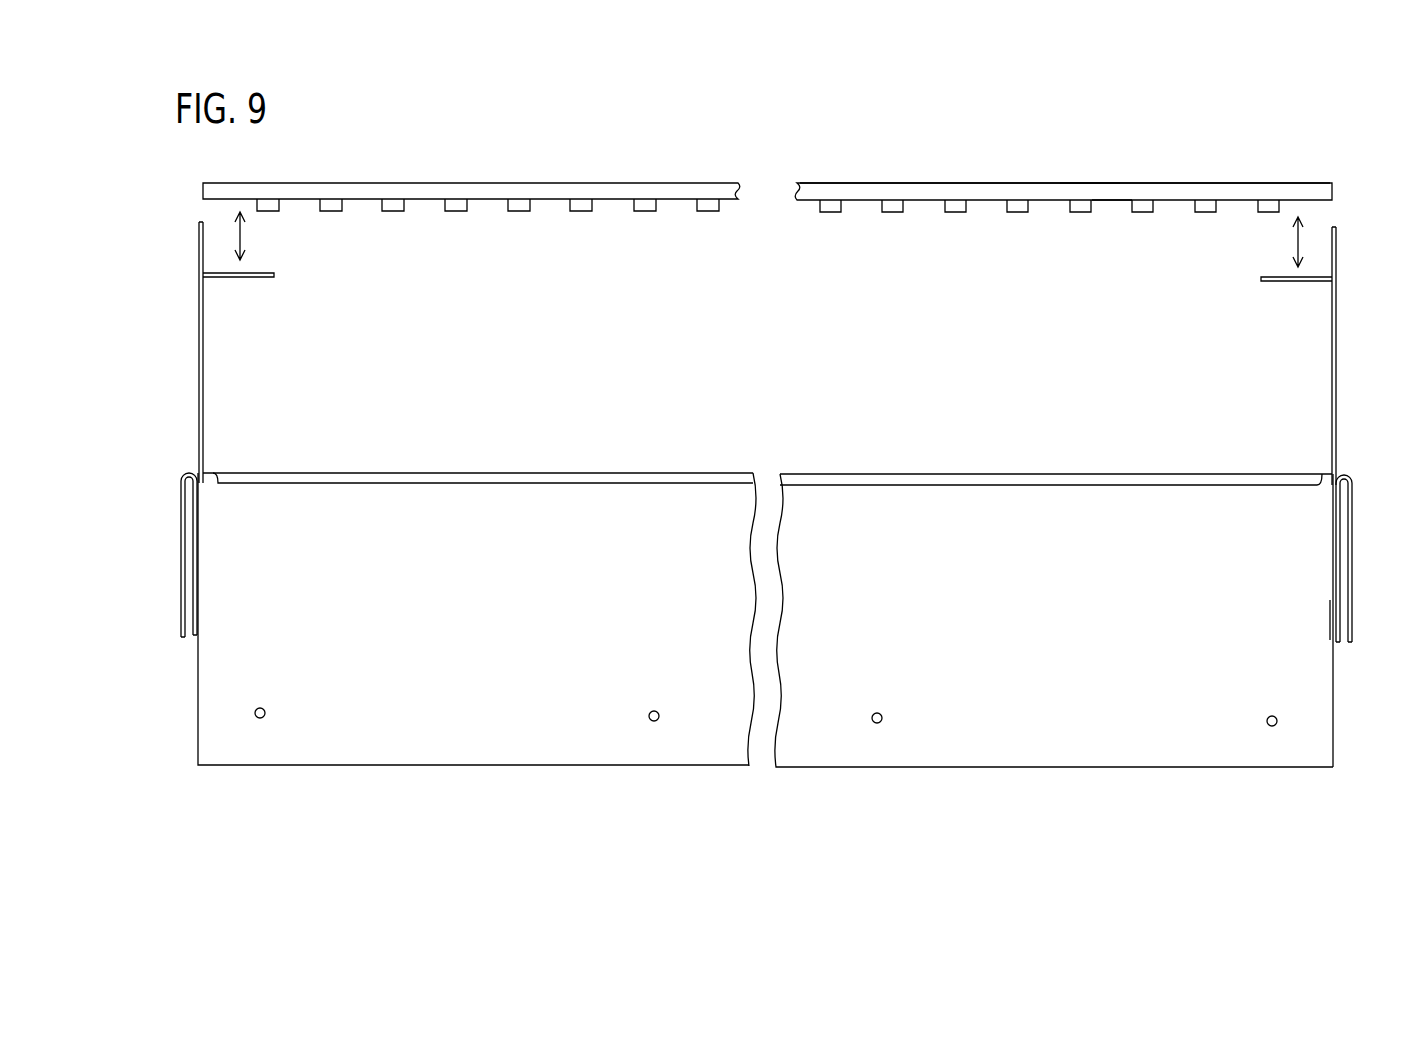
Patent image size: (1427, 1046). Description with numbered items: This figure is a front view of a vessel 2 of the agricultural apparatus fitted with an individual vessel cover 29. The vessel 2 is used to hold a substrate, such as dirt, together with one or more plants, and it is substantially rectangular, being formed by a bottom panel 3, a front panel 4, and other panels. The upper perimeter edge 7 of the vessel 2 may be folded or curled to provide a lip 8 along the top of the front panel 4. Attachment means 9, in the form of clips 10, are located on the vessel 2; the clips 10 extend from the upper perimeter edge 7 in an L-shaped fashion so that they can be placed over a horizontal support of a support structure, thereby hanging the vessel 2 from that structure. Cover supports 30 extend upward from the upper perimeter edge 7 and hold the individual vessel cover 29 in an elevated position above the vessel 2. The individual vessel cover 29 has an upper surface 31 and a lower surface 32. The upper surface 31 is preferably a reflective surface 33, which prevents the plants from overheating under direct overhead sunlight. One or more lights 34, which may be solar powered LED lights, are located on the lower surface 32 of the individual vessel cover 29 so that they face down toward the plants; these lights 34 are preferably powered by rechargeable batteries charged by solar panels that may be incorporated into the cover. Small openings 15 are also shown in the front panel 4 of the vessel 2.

The vessel 2 is at (1366, 464).
The bottom panel 3 is at (470, 766).
The front panel 4 is at (1302, 692).
The upper perimeter edge 7 is at (470, 472).
The lip 8 is at (622, 480).
The attachment means 9 is at (764, 557).
The clips 10 is at (182, 544).
The hole 15 is at (260, 708).
The individual vessel cover 29 is at (1334, 193).
The cover supports 30 is at (199, 330).
The upper surface 31 is at (1083, 184).
The lower surface 32 is at (1112, 207).
The reflective surface 33 is at (937, 183).
The lights 34 is at (519, 212).